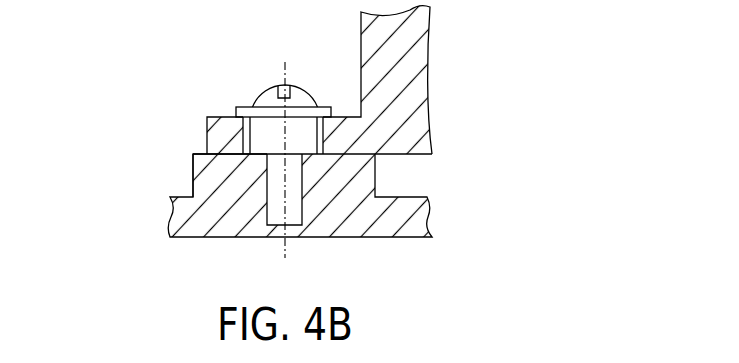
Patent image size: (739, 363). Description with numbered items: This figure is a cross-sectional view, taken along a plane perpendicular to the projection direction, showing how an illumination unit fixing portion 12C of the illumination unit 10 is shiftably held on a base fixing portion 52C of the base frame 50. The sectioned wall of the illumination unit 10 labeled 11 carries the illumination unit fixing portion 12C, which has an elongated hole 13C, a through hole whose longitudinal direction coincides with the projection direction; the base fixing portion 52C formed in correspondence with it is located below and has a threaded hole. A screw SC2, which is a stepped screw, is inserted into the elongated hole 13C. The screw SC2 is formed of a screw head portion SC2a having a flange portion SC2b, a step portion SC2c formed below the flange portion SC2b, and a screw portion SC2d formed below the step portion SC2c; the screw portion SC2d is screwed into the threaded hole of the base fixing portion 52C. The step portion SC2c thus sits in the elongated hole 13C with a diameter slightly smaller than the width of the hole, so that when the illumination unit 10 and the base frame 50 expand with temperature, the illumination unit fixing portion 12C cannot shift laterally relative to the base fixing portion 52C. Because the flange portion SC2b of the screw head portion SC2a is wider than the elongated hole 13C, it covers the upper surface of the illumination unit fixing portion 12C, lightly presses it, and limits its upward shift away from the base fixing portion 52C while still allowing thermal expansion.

The illumination unit 10 is at (331, 79).
The housing wall 11 is at (433, 22).
The illumination unit fixing portion 12C is at (220, 117).
The elongated hole 13C is at (256, 140).
The base frame 50 is at (228, 226).
The base fixing portion 52C is at (197, 178).
The screw SC2 is at (537, 45).
The screw head portion SC2a is at (303, 86).
The flange portion SC2b is at (334, 107).
The step portion SC2c is at (307, 146).
The screw portion SC2d is at (290, 188).